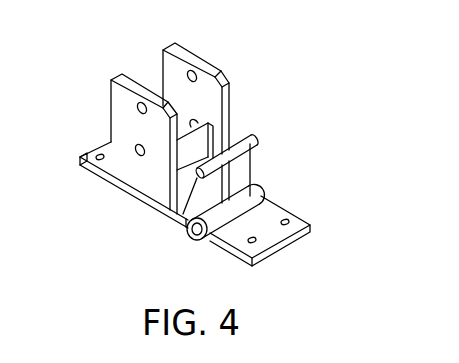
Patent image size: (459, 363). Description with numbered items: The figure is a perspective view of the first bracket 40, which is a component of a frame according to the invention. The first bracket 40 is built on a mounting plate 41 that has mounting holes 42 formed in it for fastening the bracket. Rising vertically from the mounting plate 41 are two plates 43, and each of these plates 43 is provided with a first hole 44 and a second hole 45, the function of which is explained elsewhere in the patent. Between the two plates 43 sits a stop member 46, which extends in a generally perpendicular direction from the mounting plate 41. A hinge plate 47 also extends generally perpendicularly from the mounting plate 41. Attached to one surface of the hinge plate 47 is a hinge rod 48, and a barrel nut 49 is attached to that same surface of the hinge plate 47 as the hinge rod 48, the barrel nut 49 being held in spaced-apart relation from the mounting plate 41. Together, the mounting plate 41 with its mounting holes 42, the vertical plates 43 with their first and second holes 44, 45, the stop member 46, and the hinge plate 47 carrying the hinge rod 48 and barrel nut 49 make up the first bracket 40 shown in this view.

The first bracket 40 is at (128, 210).
The mounting plate 41 is at (268, 213).
The mounting holes 42 is at (83, 166).
The plates 43 is at (122, 114).
The first hole 44 is at (138, 101).
The second hole 45 is at (137, 156).
The stop member 46 is at (232, 127).
The hinge plate 47 is at (246, 172).
The hinge rod 48 is at (183, 222).
The barrel nut 49 is at (222, 228).